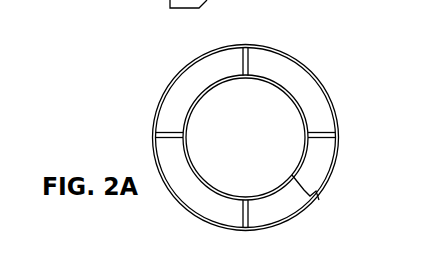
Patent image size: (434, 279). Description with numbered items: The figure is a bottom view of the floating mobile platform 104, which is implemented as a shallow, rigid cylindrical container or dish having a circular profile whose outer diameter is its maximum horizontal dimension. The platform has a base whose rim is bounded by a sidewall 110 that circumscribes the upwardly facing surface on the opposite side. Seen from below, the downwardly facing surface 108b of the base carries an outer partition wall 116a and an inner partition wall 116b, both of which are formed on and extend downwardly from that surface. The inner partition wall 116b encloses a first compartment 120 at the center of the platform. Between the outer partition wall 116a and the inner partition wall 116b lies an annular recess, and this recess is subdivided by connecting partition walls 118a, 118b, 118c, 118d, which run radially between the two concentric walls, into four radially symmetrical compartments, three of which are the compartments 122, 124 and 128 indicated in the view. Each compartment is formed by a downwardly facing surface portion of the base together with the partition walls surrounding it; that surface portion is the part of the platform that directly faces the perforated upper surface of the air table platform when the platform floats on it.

The floating mobile platform 104 is at (138, 139).
The downwardly facing surface 108b is at (338, 122).
The sidewall 110 is at (433, 127).
The outer partition wall 116a is at (363, 71).
The inner partition wall 116b is at (331, 207).
The connecting partition wall 118a is at (276, 41).
The connecting partition wall 118b is at (352, 166).
The connecting partition wall 118c is at (215, 238).
The connecting partition wall 118d is at (140, 105).
The first compartment 120 is at (263, 148).
The compartment 122 is at (315, 48).
The compartment 124 is at (165, 129).
The compartment 128 is at (312, 235).